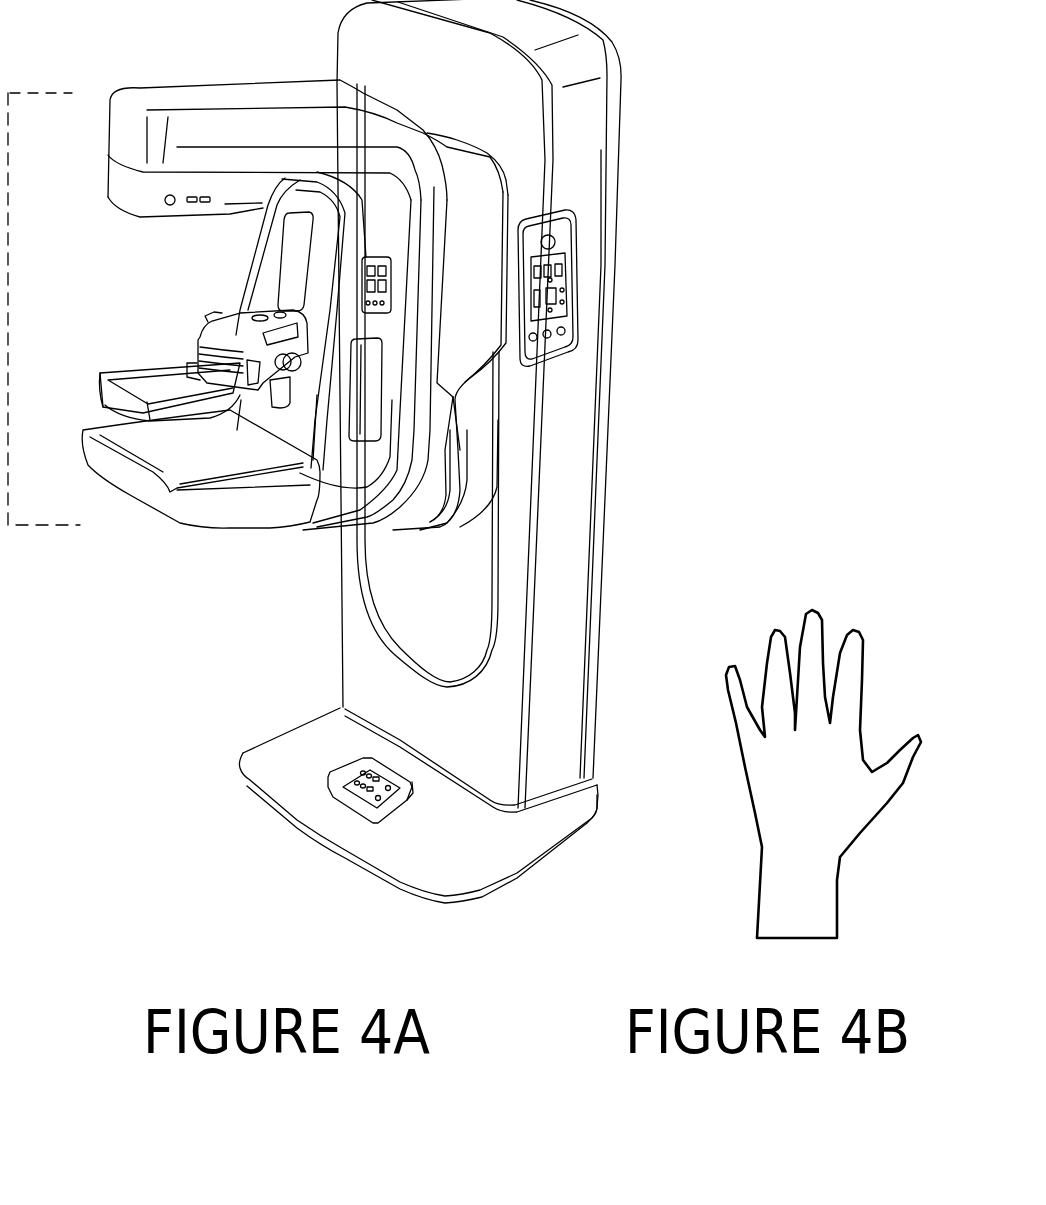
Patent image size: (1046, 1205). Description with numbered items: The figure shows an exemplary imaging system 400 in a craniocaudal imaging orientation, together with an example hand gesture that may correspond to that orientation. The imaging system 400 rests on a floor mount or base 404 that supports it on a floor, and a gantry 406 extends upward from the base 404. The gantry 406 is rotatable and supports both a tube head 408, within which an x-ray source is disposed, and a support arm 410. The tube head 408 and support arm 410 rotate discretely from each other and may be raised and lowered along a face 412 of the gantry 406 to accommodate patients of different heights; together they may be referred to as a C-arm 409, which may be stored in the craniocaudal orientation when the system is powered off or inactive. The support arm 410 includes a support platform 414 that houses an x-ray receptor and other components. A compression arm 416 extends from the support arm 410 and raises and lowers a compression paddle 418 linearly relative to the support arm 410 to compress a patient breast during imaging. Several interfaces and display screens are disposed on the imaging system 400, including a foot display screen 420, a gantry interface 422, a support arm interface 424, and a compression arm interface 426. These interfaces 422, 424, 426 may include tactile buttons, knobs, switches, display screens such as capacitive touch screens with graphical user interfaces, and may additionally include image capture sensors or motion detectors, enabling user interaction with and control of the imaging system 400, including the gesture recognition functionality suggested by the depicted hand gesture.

The imaging system 400 is at (331, 941).
The floor mount or base 404 is at (420, 897).
The gantry 406 is at (610, 378).
The tube head 408 is at (192, 100).
The C-arm 409 is at (26, 93).
The support arm 410 is at (273, 253).
The face of the gantry 412 is at (483, 200).
The support platform 414 is at (130, 483).
The compression arm 416 is at (217, 335).
The compression paddle 418 is at (107, 373).
The foot display screen 420 is at (343, 807).
The gantry interface 422 is at (577, 282).
The support arm interface 424 is at (380, 255).
The compression arm interface 426 is at (240, 313).